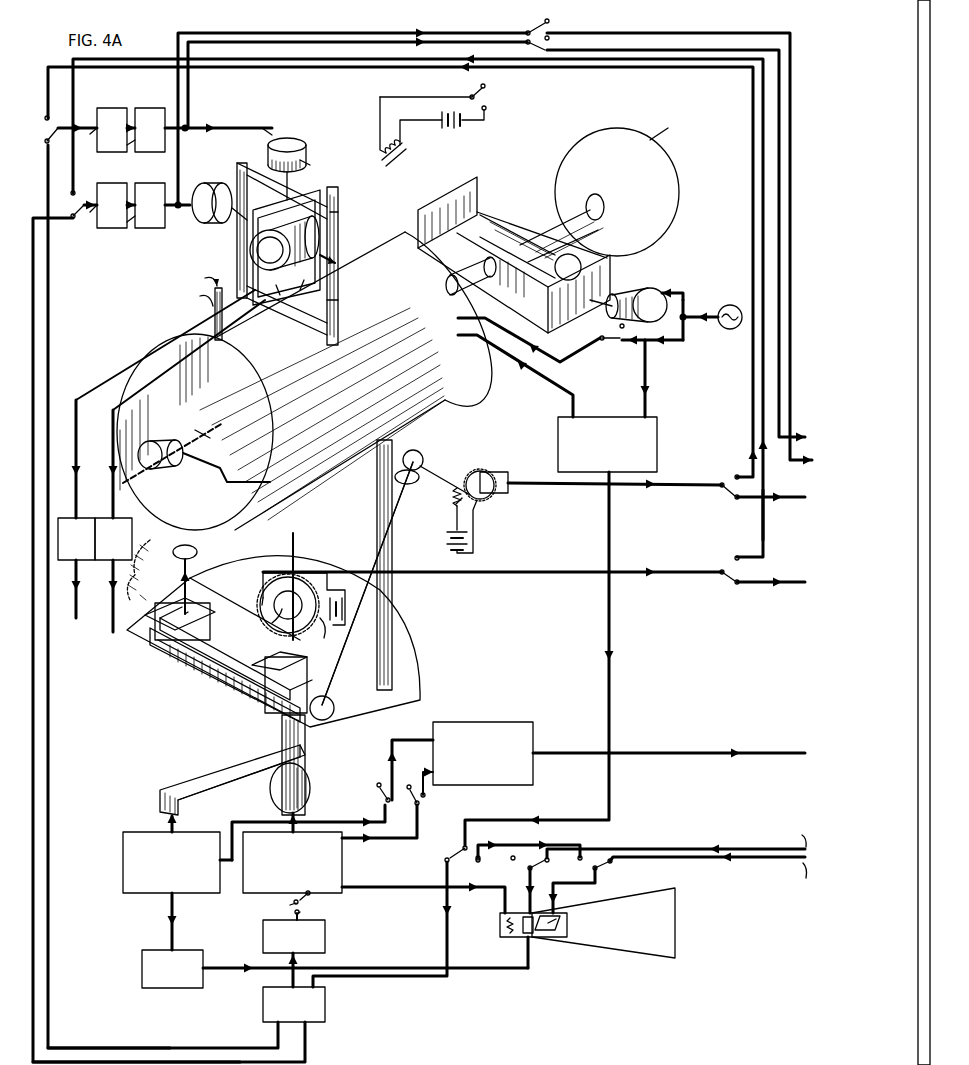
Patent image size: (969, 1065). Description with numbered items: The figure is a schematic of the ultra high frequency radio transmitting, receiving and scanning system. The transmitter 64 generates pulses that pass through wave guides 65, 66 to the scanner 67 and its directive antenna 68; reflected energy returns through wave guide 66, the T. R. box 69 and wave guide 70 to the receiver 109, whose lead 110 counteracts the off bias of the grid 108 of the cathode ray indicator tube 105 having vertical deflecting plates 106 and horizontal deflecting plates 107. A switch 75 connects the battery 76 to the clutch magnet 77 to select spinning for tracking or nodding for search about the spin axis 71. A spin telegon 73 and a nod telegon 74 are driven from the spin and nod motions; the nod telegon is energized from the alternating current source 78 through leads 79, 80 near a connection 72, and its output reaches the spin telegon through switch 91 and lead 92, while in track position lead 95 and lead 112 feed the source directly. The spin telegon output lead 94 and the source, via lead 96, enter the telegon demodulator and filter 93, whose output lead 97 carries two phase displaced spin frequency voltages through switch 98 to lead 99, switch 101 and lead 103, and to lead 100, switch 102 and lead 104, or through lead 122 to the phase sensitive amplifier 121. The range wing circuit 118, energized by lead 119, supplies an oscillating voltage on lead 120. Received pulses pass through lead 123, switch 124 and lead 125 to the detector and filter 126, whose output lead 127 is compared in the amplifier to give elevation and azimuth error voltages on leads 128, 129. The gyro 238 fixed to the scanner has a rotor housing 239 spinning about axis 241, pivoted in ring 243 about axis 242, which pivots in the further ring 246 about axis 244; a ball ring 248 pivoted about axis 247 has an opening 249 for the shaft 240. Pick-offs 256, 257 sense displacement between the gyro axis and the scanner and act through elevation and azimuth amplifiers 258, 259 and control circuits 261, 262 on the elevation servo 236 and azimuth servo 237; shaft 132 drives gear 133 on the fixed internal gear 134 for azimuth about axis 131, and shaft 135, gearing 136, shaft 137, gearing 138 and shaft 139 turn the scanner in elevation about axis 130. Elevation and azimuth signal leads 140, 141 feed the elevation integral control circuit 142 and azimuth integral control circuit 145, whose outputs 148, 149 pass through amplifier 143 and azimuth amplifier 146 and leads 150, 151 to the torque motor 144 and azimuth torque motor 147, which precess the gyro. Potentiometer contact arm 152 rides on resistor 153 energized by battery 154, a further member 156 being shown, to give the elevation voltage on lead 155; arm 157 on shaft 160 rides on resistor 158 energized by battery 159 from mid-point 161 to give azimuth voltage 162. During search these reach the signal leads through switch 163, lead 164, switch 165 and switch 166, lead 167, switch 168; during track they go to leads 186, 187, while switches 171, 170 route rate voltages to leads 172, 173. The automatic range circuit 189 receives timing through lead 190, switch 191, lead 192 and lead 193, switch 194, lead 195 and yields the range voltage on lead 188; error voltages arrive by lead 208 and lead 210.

The transmitter 64 is at (123, 838).
The wave guide 65 is at (212, 772).
The wave guide 66 is at (305, 737).
The scanner 67 is at (304, 381).
The directive antenna 68 is at (617, 188).
The T. R. box 69 is at (306, 790).
The wave guide 70 is at (280, 804).
The spin axis 71 is at (138, 478).
The shaft 72 is at (668, 320).
The spin telegon 73 is at (150, 443).
The nod telegon 74 is at (645, 298).
The switch 75 is at (486, 96).
The battery 76 is at (430, 122).
The clutch magnet 77 is at (380, 152).
The constant source of alternating current 78 is at (711, 306).
The lead 79 is at (690, 314).
The lead 80 is at (660, 296).
The switch 91 is at (602, 336).
The lead 92 is at (566, 363).
The telegon demodulator and filter 93 is at (657, 447).
The output lead 94 is at (558, 387).
The lead 95 is at (662, 343).
The lead 96 is at (645, 377).
The output lead 97 is at (609, 505).
The switch 98 is at (451, 847).
The lead 99 is at (505, 855).
The lead 100 is at (536, 844).
The switch 101 is at (666, 855).
The switch 102 is at (606, 866).
The lead 103 is at (520, 882).
The lead 104 is at (567, 885).
The cathode ray indicator tube 105 is at (670, 900).
The vertical deflecting plates 106 is at (545, 934).
The horizontal deflecting plates 107 is at (518, 937).
The grid 108 is at (507, 920).
The receiver 109 is at (342, 861).
The lead 110 is at (425, 888).
The lead 112 is at (634, 342).
The range wing circuit 118 is at (142, 963).
The lead 119 is at (172, 908).
The lead 120 is at (207, 968).
The phase sensitive amplifier 121 is at (325, 1016).
The lead 122 is at (447, 952).
The lead 123 is at (310, 895).
The switch 124 is at (309, 900).
The lead 125 is at (290, 905).
The detector and filter 126 is at (263, 930).
The output lead 127 is at (290, 978).
The output lead 128 is at (167, 1047).
The output lead 129 is at (224, 1047).
The axis 130 is at (498, 497).
The axis 131 is at (293, 555).
The shaft 132 is at (190, 602).
The gear 133 is at (197, 553).
The fixed internal gear 134 is at (185, 598).
The shaft 135 is at (309, 686).
The gearing 136 is at (332, 714).
The shaft 137 is at (392, 512).
The gearing 138 is at (415, 480).
The shaft 139 is at (410, 451).
The lead 140 is at (93, 140).
The lead 141 is at (90, 220).
The elevation integral control circuit 142 is at (112, 108).
The amplifier 143 is at (150, 108).
The torque motor 144 is at (290, 138).
The azimuth integral control circuit 145 is at (122, 228).
The azimuth amplifier 146 is at (162, 228).
The azimuth torque motor 147 is at (218, 183).
The output voltage 148 is at (130, 145).
The lead 149 is at (130, 228).
The lead 150 is at (195, 128).
The lead 151 is at (178, 208).
The potentiometer contact arm 152 is at (480, 500).
The fixed circular potentiometer resistor 153 is at (461, 482).
The battery 154 is at (456, 544).
The lead 155 is at (686, 488).
The gear 156 is at (480, 478).
The potentiometer contact arm 157 is at (300, 592).
The fixed circular potentiometer resistor 158 is at (262, 620).
The battery 159 is at (334, 631).
The shaft 160 is at (274, 626).
The mid-point 161 is at (259, 599).
The output voltage 162 is at (560, 573).
The switch 163 is at (726, 478).
The lead 164 is at (753, 390).
The switch 165 is at (47, 127).
The switch 166 is at (726, 561).
The lead 167 is at (760, 525).
The switch 168 is at (73, 205).
The switch 170 is at (528, 30).
The switch 171 is at (528, 44).
The lead 172 is at (779, 437).
The lead 173 is at (790, 462).
The lead 186 is at (780, 505).
The lead 187 is at (775, 587).
The lead 188 is at (754, 755).
The automatic range circuit 189 is at (533, 727).
The lead 190 is at (324, 822).
The switch 191 is at (380, 792).
The lead 192 is at (419, 733).
The lead 193 is at (417, 823).
The switch 194 is at (423, 796).
The lead 195 is at (418, 771).
The lead 208 is at (787, 876).
The lead 210 is at (788, 833).
The elevation servo 236 is at (320, 647).
The azimuth servo 237 is at (207, 612).
The gyro 238 is at (298, 254).
The rotor housing 239 is at (338, 214).
The shaft 240 is at (258, 256).
The axis 241 is at (185, 315).
The axis 242 is at (272, 300).
The ring 243 is at (306, 298).
The axis 244 is at (337, 265).
The further ring 246 is at (338, 298).
The axis 247 is at (318, 165).
The ball ring 248 is at (240, 300).
The opening 249 is at (253, 248).
The pick-off 256 is at (205, 278).
The pick-off 257 is at (200, 296).
The elevation amplifier 258 is at (95, 512).
The azimuth amplifier 259 is at (137, 516).
The control circuit 261 is at (258, 712).
The control circuit 262 is at (195, 665).